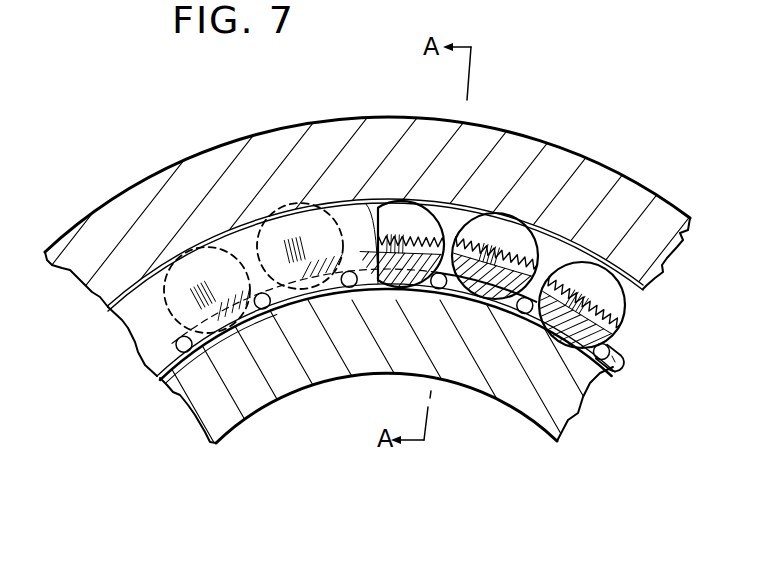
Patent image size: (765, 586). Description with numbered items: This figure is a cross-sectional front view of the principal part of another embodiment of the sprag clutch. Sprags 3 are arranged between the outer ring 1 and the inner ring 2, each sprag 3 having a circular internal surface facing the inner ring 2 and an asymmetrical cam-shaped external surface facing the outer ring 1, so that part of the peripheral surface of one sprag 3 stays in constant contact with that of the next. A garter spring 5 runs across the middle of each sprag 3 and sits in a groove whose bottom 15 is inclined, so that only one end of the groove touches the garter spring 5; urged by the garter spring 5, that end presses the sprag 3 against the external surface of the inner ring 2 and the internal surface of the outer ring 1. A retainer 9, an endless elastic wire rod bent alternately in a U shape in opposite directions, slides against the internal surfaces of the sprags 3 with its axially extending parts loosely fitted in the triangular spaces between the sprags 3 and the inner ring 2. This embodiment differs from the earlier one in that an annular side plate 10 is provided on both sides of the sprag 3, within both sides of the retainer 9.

The outer ring 1 is at (326, 132).
The inner ring 2 is at (295, 380).
The sprag 3 is at (511, 245).
The garter spring 5 is at (627, 306).
The retainer 9 is at (622, 353).
The annular side plate 10 is at (124, 346).
The bottom 15 is at (497, 285).